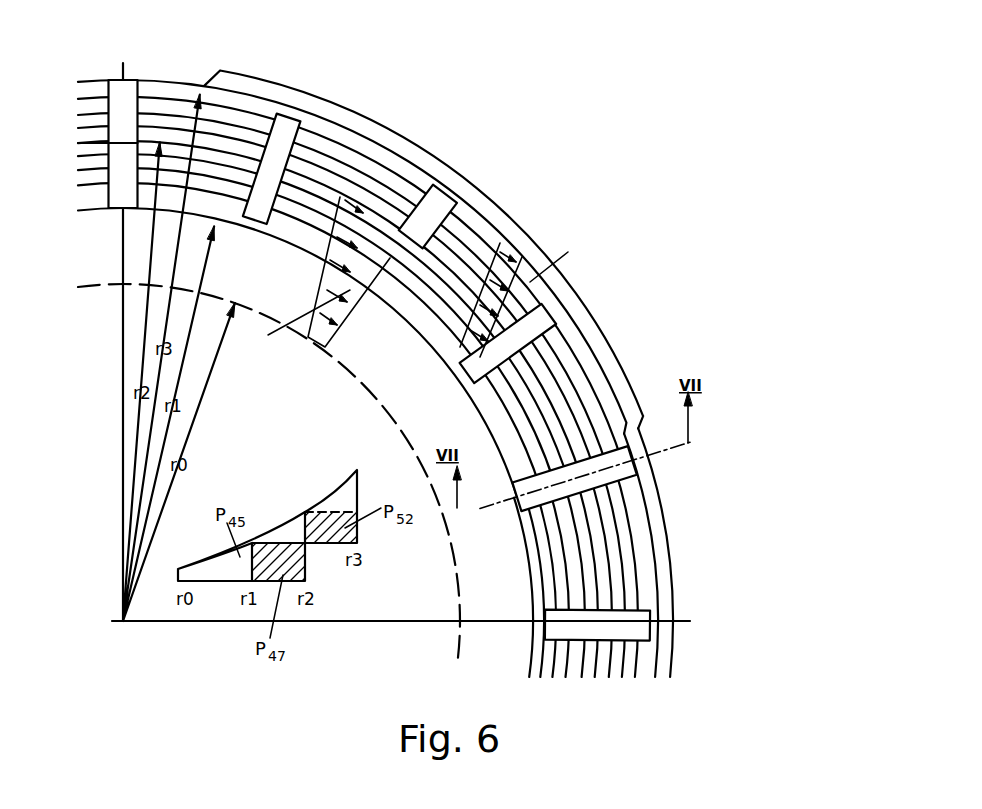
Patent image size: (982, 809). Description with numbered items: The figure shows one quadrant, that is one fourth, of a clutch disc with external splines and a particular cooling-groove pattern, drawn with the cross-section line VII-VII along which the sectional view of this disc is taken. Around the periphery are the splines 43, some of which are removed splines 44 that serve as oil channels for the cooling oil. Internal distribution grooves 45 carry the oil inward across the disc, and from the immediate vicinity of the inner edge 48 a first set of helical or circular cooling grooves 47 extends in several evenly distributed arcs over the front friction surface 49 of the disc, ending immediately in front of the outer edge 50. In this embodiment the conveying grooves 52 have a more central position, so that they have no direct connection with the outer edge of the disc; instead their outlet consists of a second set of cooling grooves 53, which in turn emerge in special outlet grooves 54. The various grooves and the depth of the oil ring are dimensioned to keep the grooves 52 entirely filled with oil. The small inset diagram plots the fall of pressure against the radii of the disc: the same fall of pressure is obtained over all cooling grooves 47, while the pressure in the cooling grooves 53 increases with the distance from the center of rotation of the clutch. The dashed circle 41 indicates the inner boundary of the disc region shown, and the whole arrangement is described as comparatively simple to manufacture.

The rotor boundary circle 41 is at (372, 390).
The splines 43 is at (398, 150).
The removed splines 44 is at (612, 402).
The internal distribution grooves 45 is at (375, 288).
The cooling grooves 47 is at (577, 568).
The inner edge 48 is at (435, 353).
The front friction surface 49 is at (572, 440).
The outer edge 50 is at (580, 360).
The conveying grooves 52 is at (280, 128).
The second set of cooling grooves 53 is at (600, 580).
The outlet grooves 54 is at (427, 193).